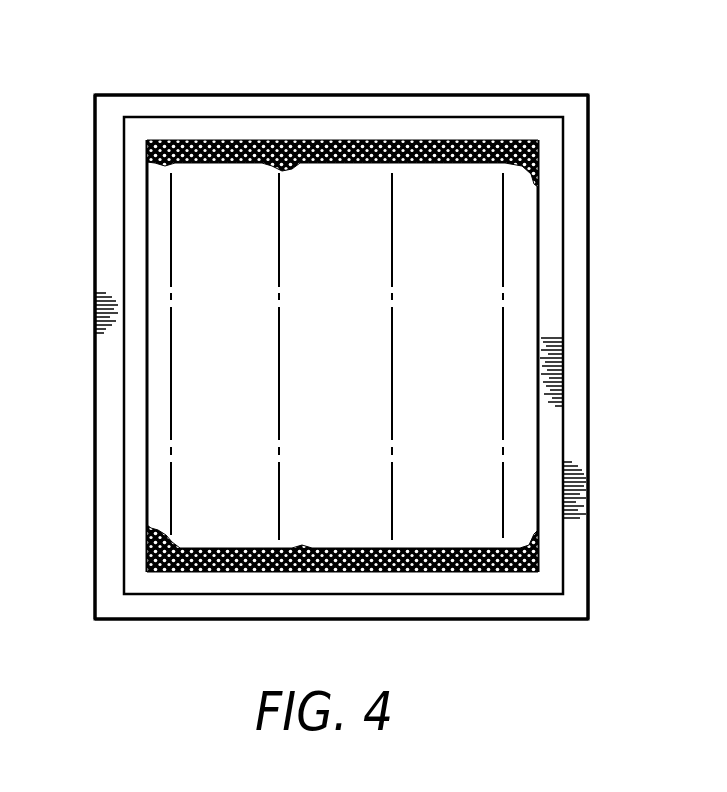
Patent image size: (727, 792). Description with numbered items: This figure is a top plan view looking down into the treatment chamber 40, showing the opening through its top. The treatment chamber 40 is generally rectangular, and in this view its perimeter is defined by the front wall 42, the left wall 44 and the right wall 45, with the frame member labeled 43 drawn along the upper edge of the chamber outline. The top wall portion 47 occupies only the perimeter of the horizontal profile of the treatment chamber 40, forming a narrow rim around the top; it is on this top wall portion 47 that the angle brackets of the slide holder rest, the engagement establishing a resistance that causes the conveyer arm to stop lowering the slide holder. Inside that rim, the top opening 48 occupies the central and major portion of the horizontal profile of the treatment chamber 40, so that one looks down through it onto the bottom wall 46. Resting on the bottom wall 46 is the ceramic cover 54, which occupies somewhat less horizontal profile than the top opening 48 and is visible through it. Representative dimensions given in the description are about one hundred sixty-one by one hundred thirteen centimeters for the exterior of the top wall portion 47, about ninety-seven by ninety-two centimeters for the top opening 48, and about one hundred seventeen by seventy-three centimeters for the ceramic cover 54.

The treatment chamber 40 is at (87, 99).
The front wall 42 is at (328, 621).
The top frame member 43 is at (358, 95).
The left wall 44 is at (93, 530).
The right wall 45 is at (590, 340).
The bottom wall 46 is at (135, 352).
The top wall portion 47 is at (110, 238).
The top opening 48 is at (127, 182).
The ceramic cover 54 is at (187, 400).